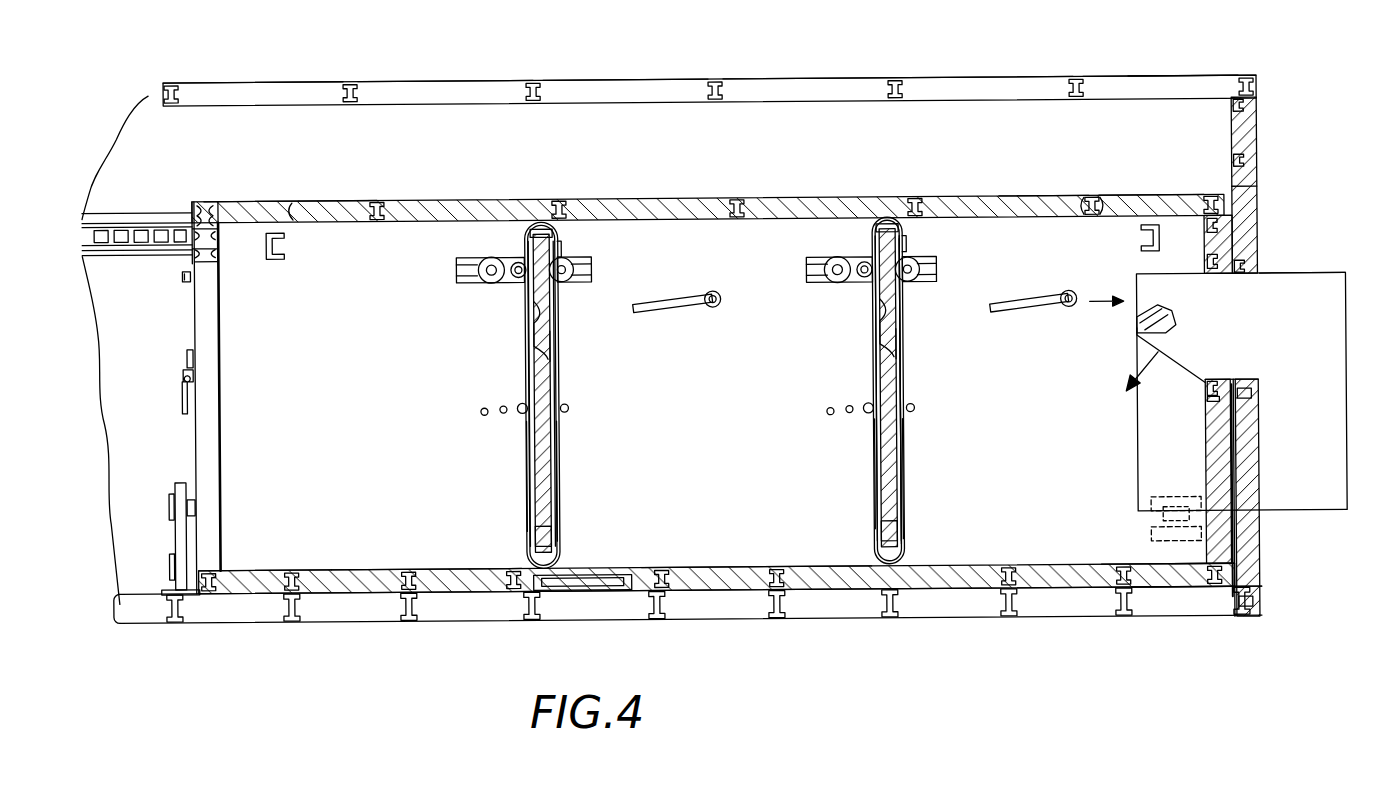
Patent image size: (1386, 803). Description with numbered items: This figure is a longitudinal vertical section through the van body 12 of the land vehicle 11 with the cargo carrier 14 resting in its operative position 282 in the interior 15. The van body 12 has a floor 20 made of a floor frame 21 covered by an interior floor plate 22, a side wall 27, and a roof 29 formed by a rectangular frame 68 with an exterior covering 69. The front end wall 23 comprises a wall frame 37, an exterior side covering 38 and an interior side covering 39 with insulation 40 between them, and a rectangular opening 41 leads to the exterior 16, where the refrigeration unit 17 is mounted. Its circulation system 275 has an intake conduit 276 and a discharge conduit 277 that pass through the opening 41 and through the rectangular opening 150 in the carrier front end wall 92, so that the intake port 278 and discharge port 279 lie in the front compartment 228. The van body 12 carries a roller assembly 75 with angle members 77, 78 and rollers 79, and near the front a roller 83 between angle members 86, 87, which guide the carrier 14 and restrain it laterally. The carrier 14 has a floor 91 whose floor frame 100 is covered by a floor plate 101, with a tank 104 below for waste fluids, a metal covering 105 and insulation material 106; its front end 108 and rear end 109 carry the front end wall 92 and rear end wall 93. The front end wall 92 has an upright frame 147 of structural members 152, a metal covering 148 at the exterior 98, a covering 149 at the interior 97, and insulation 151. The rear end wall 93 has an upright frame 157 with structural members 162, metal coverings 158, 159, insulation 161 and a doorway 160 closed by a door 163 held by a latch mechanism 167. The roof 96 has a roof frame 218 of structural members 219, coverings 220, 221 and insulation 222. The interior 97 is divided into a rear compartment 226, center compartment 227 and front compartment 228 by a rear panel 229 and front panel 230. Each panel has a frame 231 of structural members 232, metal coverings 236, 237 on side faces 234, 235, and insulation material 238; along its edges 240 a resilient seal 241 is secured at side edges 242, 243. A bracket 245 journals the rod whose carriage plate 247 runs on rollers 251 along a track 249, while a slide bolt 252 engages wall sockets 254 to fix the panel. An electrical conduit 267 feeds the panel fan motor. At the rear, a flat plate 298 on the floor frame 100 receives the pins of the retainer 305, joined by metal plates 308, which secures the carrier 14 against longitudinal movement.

The land vehicle 11 is at (1152, 80).
The van body 12 is at (732, 96).
The cargo carrier 14 is at (370, 198).
The interior of the van body 15 is at (228, 104).
The exterior of the van body 16 is at (913, 80).
The refrigeration unit 17 is at (1330, 277).
The floor 20 is at (116, 595).
The floor frame 21 is at (1140, 619).
The interior floor plate 22 is at (128, 588).
The front end wall 23 is at (1262, 128).
The side wall 27 is at (590, 106).
The roof 29 is at (1016, 80).
The wall frame 37 is at (1232, 152).
The exterior side covering 38 is at (1262, 156).
The interior side covering 39 is at (1232, 124).
The insulation 40 is at (1252, 466).
The rectangular opening 41 is at (1245, 288).
The rectangular frame 68 is at (362, 82).
The exterior covering 69 is at (436, 79).
The roller assembly 75 is at (116, 209).
The angle member 77 is at (152, 209).
The angle member 78 is at (98, 250).
The rollers 79 is at (154, 246).
The roller 83 is at (1162, 514).
The angle member 86 is at (1150, 500).
The angle member 87 is at (1150, 540).
The floor 91 is at (310, 567).
The front end wall 92 is at (1238, 255).
The rear end wall 93 is at (194, 320).
The roof 96 is at (246, 198).
The interior of the carrier 97 is at (294, 198).
The exterior of the carrier 98 is at (336, 198).
The floor frame 100 is at (758, 567).
The floor plate 101 is at (366, 567).
The tank 104 is at (630, 574).
The metal covering 105 is at (335, 595).
The insulation material 106 is at (1200, 592).
The front end of the floor 108 is at (1165, 572).
The rear end of the floor 109 is at (246, 567).
The upright frame 147 is at (1204, 420).
The metal covering 148 is at (1240, 436).
The covering 149 is at (1204, 462).
The rectangular opening 150 is at (1204, 396).
The insulation 151 is at (1206, 240).
The structural members 152 is at (1208, 256).
The upright frame 157 is at (222, 265).
The metal covering 158 is at (190, 252).
The metal covering 159 is at (218, 250).
The doorway 160 is at (220, 282).
The insulation 161 is at (218, 230).
The structural members 162 is at (208, 198).
The door 163 is at (219, 340).
The latch mechanism 167 is at (186, 366).
The roof frame 218 is at (1214, 198).
The structural members 219 is at (1086, 219).
The covering 220 is at (1058, 198).
The covering 221 is at (1126, 219).
The insulation 222 is at (1150, 198).
The rear compartment 226 is at (333, 406).
The center compartment 227 is at (688, 434).
The front compartment 228 is at (1013, 422).
The rear panel 229 is at (560, 462).
The front panel 230 is at (905, 447).
The frame 231 is at (526, 306).
The structural members 232 is at (552, 312).
The side face 234 is at (528, 360).
The side face 235 is at (556, 362).
The metal covering 236 is at (526, 458).
The metal covering 237 is at (558, 486).
The insulation material 238 is at (552, 508).
The edges of the panel 240 is at (546, 221).
The seal 241 is at (558, 228).
The side edge 242 is at (528, 236).
The side edge 243 is at (558, 240).
The bracket 245 is at (520, 286).
The carriage plate 247 is at (582, 283).
The track 249 is at (580, 282).
The rollers 251 is at (457, 256).
The slide bolt 252 is at (520, 402).
The wall sockets 254 is at (479, 414).
The electrical conduit 267 is at (712, 308).
The circulation system 275 is at (1204, 382).
The intake conduit 276 is at (1137, 300).
The discharge conduit 277 is at (1162, 340).
The intake port 278 is at (1137, 322).
The discharge port 279 is at (1148, 344).
The operative position 282 is at (1240, 540).
The flat plate 298 is at (166, 590).
The retainer 305 is at (184, 478).
The metal plates 308 is at (168, 522).